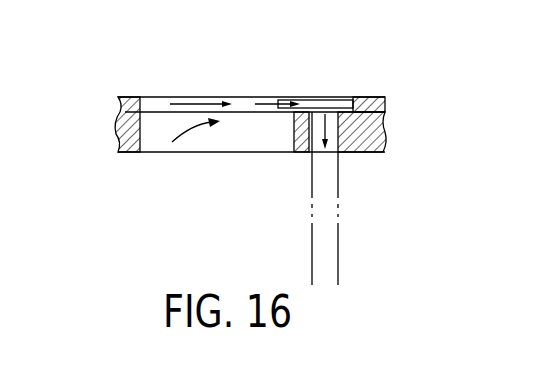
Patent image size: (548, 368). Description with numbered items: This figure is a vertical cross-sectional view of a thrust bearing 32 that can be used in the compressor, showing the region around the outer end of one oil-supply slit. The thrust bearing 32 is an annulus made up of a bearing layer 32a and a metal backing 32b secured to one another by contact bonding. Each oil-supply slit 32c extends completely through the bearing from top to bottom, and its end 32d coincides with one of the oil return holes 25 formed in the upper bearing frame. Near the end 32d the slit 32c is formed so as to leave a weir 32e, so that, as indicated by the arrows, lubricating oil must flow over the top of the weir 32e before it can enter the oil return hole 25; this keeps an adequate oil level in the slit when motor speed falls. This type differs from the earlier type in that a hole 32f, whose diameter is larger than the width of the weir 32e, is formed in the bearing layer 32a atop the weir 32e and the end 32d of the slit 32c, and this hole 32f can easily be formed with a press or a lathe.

The thrust bearing 32 is at (128, 80).
The bearing layer 32a is at (120, 107).
The metal backing 32b is at (120, 136).
The oil-supply slit 32c is at (250, 142).
The end of slit 32d is at (327, 152).
The weir 32e is at (298, 153).
The hole 32f is at (316, 97).
The oil return hole 25 is at (340, 238).